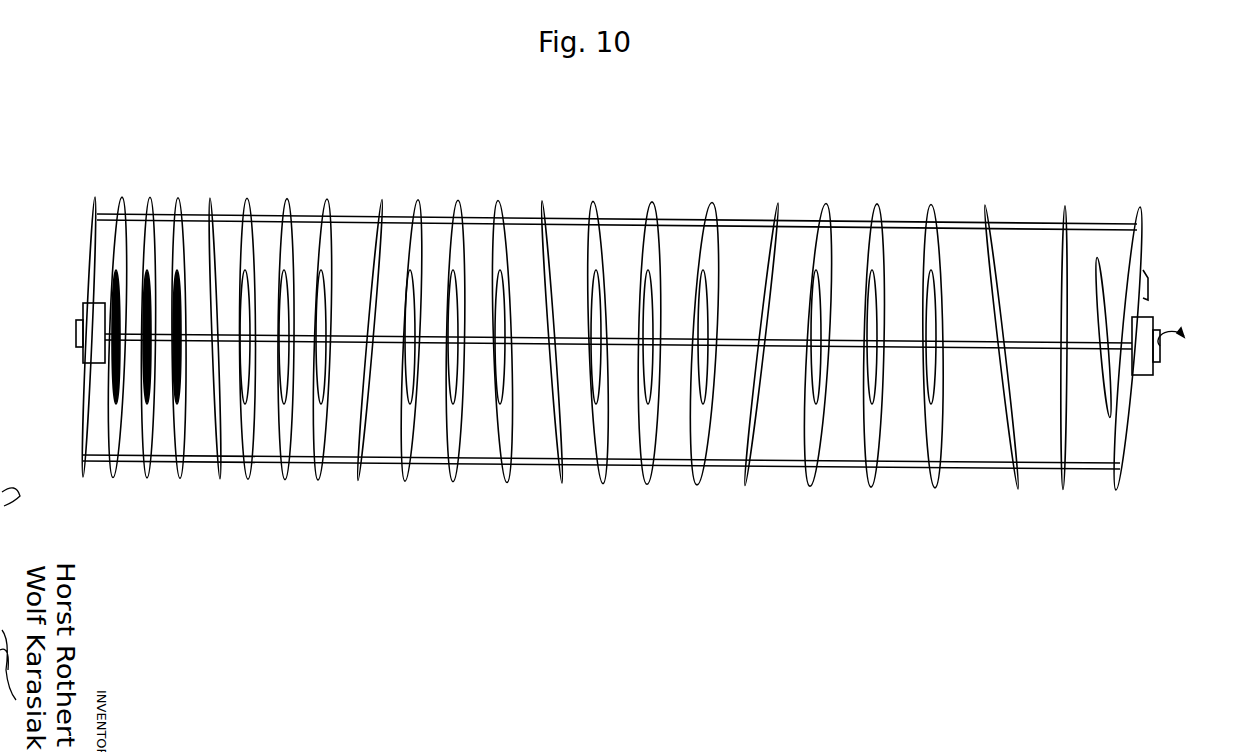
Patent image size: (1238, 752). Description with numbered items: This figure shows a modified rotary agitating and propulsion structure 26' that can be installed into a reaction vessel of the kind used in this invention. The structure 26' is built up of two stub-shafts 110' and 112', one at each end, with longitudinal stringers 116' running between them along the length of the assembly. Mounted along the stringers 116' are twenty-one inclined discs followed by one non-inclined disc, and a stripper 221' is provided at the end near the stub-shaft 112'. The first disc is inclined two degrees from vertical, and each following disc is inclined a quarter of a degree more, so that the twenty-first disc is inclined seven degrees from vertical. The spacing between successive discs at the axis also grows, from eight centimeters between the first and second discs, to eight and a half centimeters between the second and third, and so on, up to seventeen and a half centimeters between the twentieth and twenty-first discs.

The rotary agitating and propulsion structure 26' is at (616, 324).
The stub-shaft 110' is at (65, 324).
The stub-shaft 112' is at (1169, 326).
The longitudinal stringers 116' is at (610, 363).
The stripper 221' is at (1139, 323).